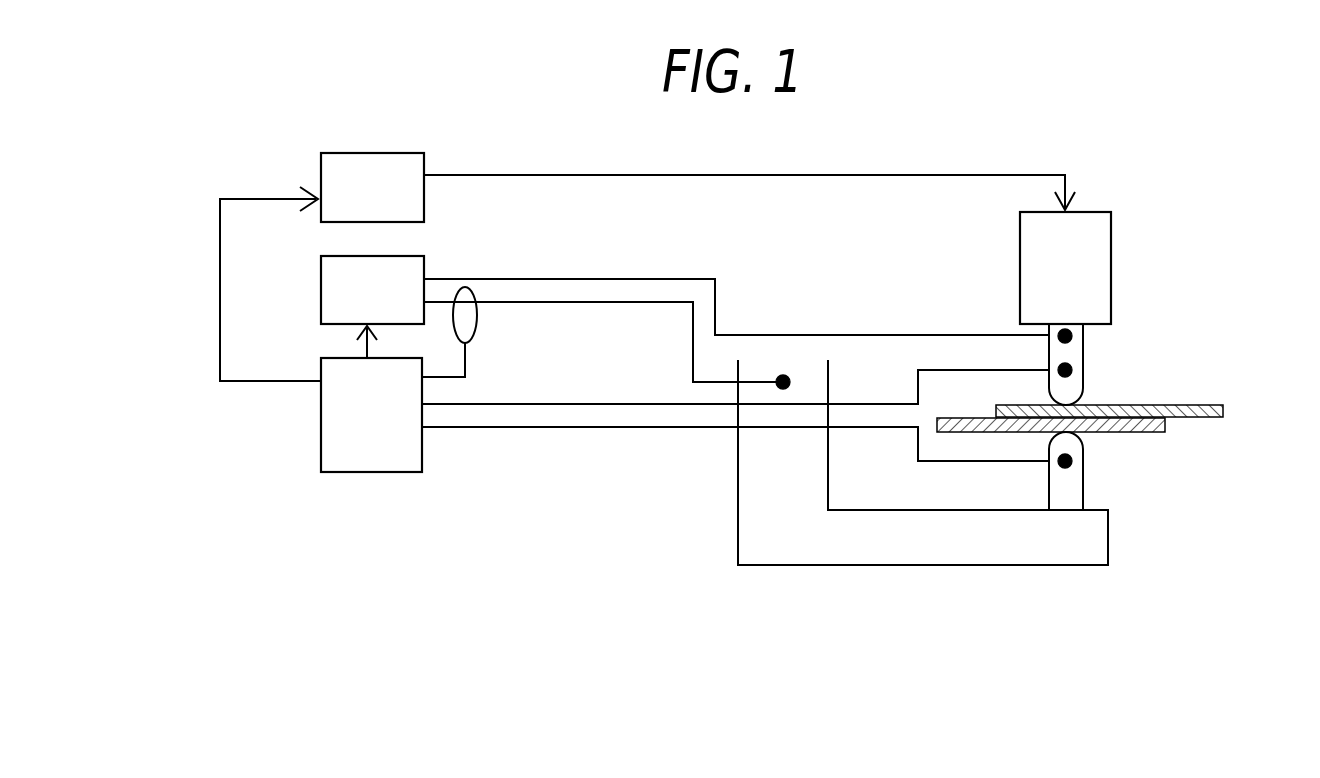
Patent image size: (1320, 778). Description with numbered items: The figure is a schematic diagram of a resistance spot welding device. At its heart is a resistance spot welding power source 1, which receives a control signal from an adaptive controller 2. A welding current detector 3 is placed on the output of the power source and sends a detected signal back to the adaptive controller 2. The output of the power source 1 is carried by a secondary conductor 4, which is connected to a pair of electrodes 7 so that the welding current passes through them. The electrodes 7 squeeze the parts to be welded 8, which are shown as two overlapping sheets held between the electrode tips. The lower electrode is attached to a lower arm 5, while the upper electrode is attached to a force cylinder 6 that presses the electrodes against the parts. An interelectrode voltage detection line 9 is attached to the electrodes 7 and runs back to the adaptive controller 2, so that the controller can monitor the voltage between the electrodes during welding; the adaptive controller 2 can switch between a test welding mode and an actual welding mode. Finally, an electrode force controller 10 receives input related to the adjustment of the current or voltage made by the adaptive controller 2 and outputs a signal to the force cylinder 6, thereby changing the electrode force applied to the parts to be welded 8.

The resistance spot welding power source 1 is at (322, 284).
The adaptive controller 2 is at (320, 414).
The welding current detector 3 is at (477, 325).
The secondary conductor 4 is at (578, 300).
The lower arm 5 is at (952, 565).
The force cylinder 6 is at (1112, 270).
The electrodes 7 is at (1083, 357).
The parts to be welded 8 is at (1200, 402).
The interelectrode voltage detection line 9 is at (578, 430).
The electrode force controller 10 is at (320, 162).